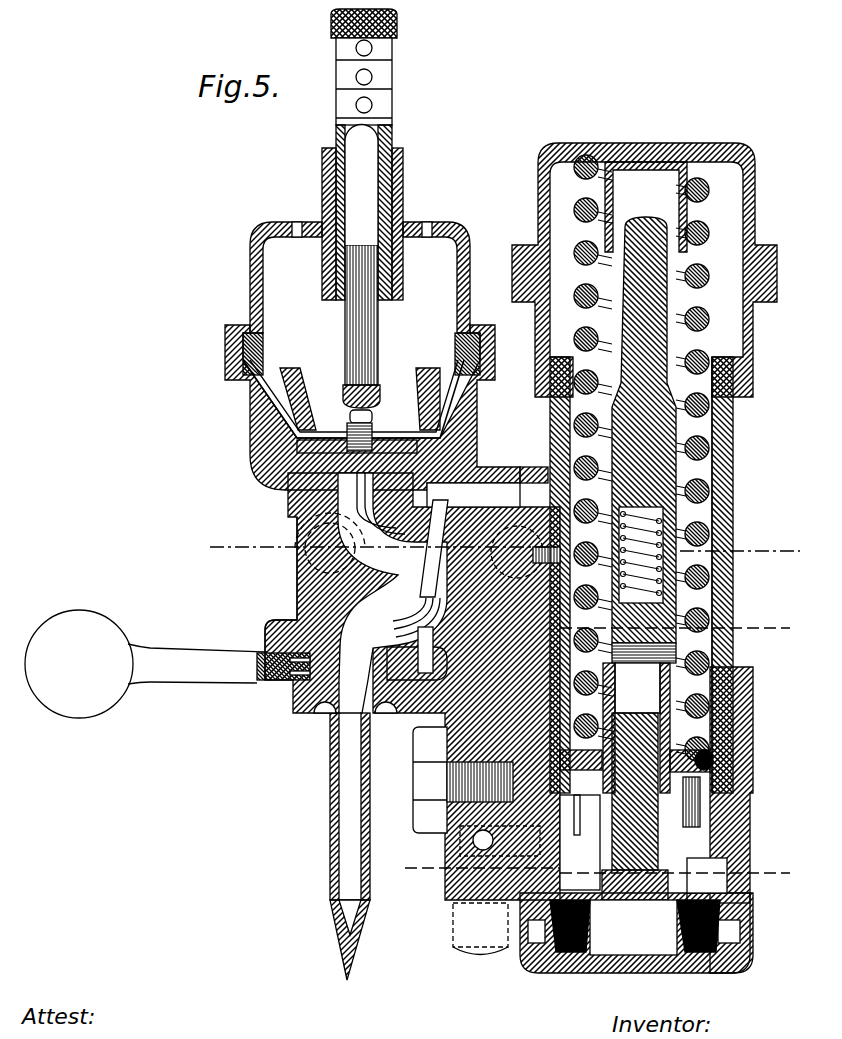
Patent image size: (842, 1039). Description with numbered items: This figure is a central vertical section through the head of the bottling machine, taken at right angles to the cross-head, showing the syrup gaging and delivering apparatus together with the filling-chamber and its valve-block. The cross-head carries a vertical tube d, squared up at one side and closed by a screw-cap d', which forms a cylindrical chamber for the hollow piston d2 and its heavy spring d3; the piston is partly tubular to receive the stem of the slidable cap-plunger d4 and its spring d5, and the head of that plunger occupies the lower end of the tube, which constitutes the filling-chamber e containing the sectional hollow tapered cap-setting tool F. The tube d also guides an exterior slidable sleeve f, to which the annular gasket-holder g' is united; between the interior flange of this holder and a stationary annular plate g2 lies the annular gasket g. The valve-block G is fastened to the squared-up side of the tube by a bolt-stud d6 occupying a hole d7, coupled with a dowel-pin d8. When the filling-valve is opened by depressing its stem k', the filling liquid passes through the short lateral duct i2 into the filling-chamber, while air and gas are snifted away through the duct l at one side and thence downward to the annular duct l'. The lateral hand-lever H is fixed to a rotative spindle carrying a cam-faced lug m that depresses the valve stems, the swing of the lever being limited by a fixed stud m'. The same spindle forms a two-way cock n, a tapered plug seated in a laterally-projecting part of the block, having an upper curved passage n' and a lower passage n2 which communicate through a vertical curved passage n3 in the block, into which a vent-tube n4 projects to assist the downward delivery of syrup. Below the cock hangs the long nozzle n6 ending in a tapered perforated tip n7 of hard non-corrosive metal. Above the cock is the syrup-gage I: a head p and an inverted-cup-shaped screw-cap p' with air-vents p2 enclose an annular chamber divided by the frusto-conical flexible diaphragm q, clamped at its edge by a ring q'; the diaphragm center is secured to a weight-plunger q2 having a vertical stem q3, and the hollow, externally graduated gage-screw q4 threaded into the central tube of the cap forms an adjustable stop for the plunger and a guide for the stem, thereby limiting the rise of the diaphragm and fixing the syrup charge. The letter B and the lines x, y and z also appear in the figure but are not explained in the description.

The hollow gage-screw q4 is at (386, 129).
The valve body B is at (583, 177).
The air-vents p2 is at (297, 222).
The syrup-gage I is at (271, 224).
The screw-cap p' is at (360, 277).
The ring q' is at (361, 339).
The flexible diaphragm q is at (353, 385).
The central vertical stem q3 is at (370, 314).
The weight-plunger q2 is at (428, 402).
The head p is at (366, 319).
The slidable sleeve f is at (550, 433).
The cam-faced lug m is at (473, 473).
The stem of filling-valve k' is at (534, 468).
The vent-tube n4 is at (441, 530).
The dowel-pin d8 is at (521, 530).
The upper passage of cock n' is at (302, 536).
The section line x is at (492, 548).
The two-way cock n is at (349, 593).
The vertical curved passage n3 is at (300, 599).
The lower passage of cock n2 is at (310, 627).
The hand-lever H is at (167, 664).
The section line y is at (680, 627).
The vertical tube d is at (750, 575).
The spring of cap-plunger d5 is at (641, 536).
The hollow piston d2 is at (655, 433).
The screw-cap d' is at (655, 270).
The piston spring d3 is at (597, 306).
The fixed stud m' is at (417, 669).
The valve-block G is at (467, 703).
The nozzle n6 is at (340, 800).
The bolt-stud d6 is at (447, 786).
The section line z is at (590, 870).
The lateral duct i2 is at (500, 841).
The cap-plunger d4 is at (642, 725).
The hole d7 is at (712, 763).
The cap-setting tool F is at (677, 847).
The snifting duct l is at (736, 865).
The stationary annular plate g2 is at (718, 893).
The annular duct l' is at (614, 939).
The gasket-holder g' is at (655, 945).
The filling-chamber e is at (684, 895).
The annular gasket g is at (635, 954).
The tapered perforated tip n7 is at (338, 950).